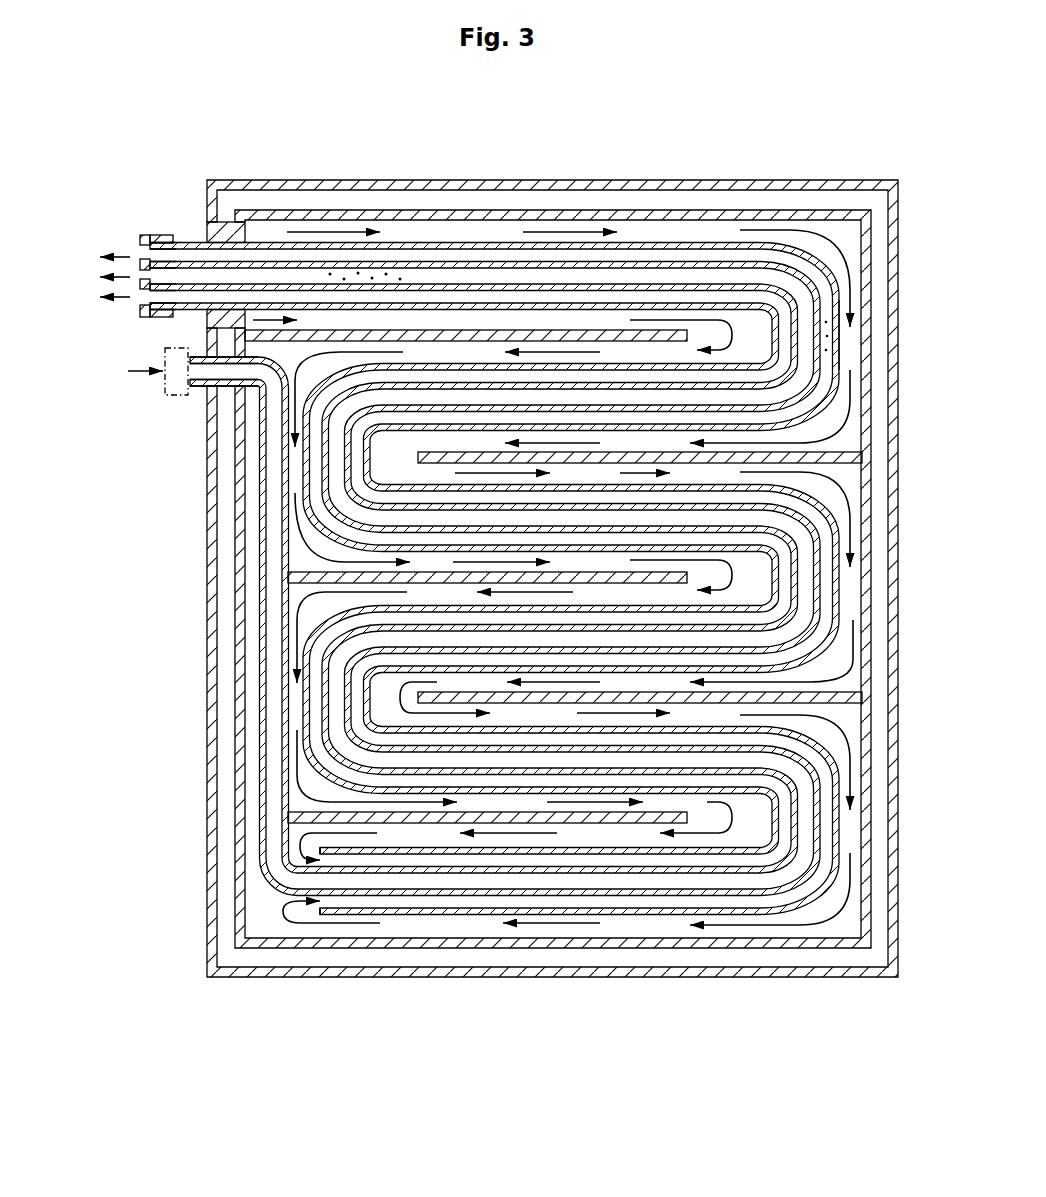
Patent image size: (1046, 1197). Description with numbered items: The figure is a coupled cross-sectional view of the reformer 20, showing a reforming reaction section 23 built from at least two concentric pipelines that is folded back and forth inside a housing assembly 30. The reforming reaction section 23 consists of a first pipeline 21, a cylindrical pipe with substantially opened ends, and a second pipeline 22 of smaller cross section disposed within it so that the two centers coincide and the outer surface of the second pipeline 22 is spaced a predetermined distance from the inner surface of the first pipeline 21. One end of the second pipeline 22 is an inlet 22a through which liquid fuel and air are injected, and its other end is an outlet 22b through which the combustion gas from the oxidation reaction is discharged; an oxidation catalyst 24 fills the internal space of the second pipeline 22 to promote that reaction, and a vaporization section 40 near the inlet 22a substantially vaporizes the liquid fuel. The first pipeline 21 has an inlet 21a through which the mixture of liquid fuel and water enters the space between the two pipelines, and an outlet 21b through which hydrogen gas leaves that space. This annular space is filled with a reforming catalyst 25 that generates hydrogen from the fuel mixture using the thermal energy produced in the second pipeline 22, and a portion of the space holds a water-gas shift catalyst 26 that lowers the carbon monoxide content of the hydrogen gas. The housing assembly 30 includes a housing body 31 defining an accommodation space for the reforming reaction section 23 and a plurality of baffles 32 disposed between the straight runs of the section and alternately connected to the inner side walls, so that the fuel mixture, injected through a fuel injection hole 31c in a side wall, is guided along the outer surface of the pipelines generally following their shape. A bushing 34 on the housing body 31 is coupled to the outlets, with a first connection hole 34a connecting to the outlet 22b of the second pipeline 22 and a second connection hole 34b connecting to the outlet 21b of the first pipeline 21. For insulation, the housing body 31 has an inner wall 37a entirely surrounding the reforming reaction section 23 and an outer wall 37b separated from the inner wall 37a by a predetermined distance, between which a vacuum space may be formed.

The reformer 20 is at (860, 132).
The first pipeline 21 is at (525, 242).
The inlet of the first pipeline 21a is at (320, 905).
The outlet of the first pipeline 21b is at (140, 312).
The second pipeline 22 is at (623, 262).
The inlet of the second pipeline 22a is at (187, 382).
The outlet of the second pipeline 22b is at (183, 262).
The reforming reaction section 23 is at (660, 240).
The oxidation catalyst 24 is at (342, 277).
The reforming catalyst 25 is at (830, 337).
The water-gas shift catalyst 26 is at (843, 317).
The housing assembly 30 is at (205, 723).
The housing body 31 is at (145, 618).
The fuel injection hole 31c is at (207, 225).
The baffles 32 is at (455, 330).
The bushing 34 is at (143, 236).
The first connection hole 34a is at (140, 272).
The second connection hole 34b is at (140, 253).
The inner wall 37a is at (240, 617).
The outer wall 37b is at (208, 667).
The vaporization section 40 is at (160, 383).